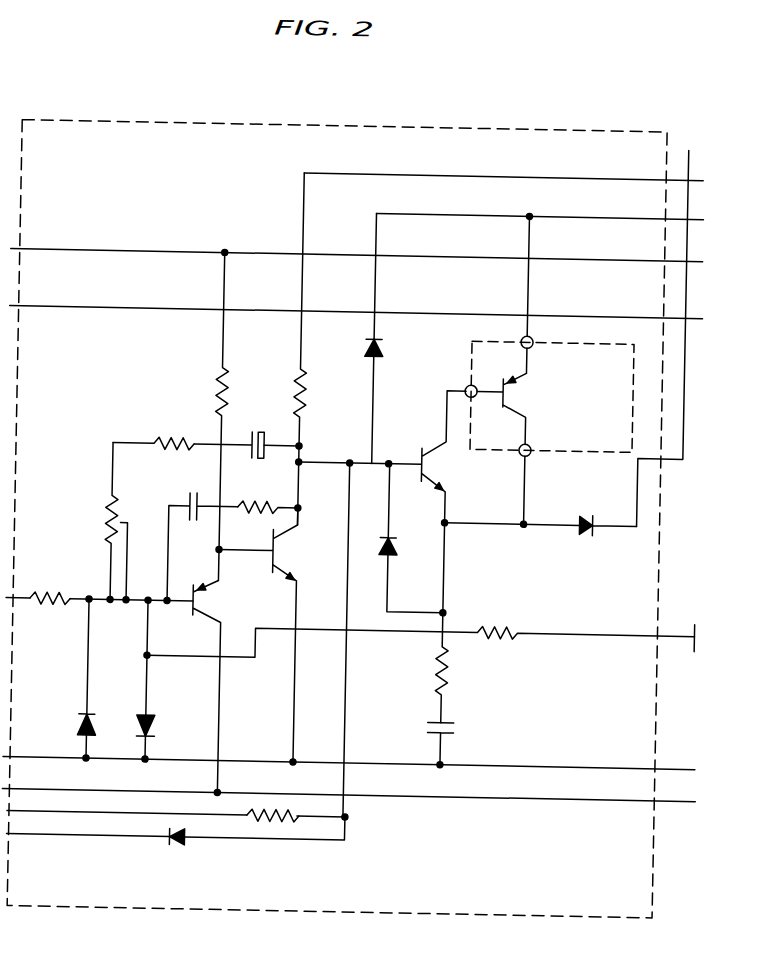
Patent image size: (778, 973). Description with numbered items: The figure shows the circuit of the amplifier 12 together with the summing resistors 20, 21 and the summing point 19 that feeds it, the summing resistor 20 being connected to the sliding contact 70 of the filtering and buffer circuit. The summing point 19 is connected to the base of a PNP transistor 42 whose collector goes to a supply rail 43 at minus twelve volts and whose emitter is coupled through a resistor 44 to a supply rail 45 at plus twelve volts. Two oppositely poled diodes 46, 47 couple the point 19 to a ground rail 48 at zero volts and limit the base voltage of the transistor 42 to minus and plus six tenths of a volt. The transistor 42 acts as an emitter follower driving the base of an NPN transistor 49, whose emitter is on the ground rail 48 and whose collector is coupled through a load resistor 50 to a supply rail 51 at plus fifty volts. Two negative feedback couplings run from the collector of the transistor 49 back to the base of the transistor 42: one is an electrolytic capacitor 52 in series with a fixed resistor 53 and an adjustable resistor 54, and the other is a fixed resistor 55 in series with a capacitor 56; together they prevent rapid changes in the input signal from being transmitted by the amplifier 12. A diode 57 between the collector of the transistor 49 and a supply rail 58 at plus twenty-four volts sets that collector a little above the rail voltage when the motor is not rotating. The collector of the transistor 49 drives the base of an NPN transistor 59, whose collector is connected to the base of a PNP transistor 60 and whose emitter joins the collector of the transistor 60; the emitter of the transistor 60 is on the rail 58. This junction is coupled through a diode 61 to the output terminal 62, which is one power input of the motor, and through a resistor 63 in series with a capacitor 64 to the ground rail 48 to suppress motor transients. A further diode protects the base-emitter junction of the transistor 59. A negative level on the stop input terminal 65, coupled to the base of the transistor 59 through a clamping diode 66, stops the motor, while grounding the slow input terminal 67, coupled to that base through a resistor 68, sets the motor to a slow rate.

The amplifier 12 is at (200, 125).
The summing point 19 is at (111, 600).
The summing resistor 20 is at (515, 628).
The summing resistor 21 is at (62, 610).
The PNP transistor 42 is at (203, 604).
The supply rail 43 is at (679, 797).
The resistor 44 is at (216, 380).
The supply rail 45 is at (645, 255).
The diode 46 is at (80, 732).
The diode 47 is at (160, 729).
The ground rail 48 is at (673, 763).
The NPN transistor 49 is at (280, 547).
The load resistor 50 is at (303, 404).
The supply rail 51 is at (637, 174).
The electrolytic capacitor 52 is at (260, 434).
The fixed resistor 53 is at (183, 446).
The adjustable resistor 54 is at (105, 524).
The fixed resistor 55 is at (251, 508).
The capacitor 56 is at (192, 493).
The diode 57 is at (383, 347).
The supply rail 58 is at (640, 213).
The NPN transistor 59 is at (428, 461).
The PNP transistor 60 is at (517, 391).
The diode 61 is at (581, 514).
The output terminal 62 is at (682, 144).
The resistor 63 is at (438, 665).
The capacitor 64 is at (430, 725).
The stop input terminal 65 is at (44, 841).
The clamping diode 66 is at (182, 846).
The slow input terminal 67 is at (57, 817).
The resistor 68 is at (291, 828).
The sliding contact 70 is at (697, 619).